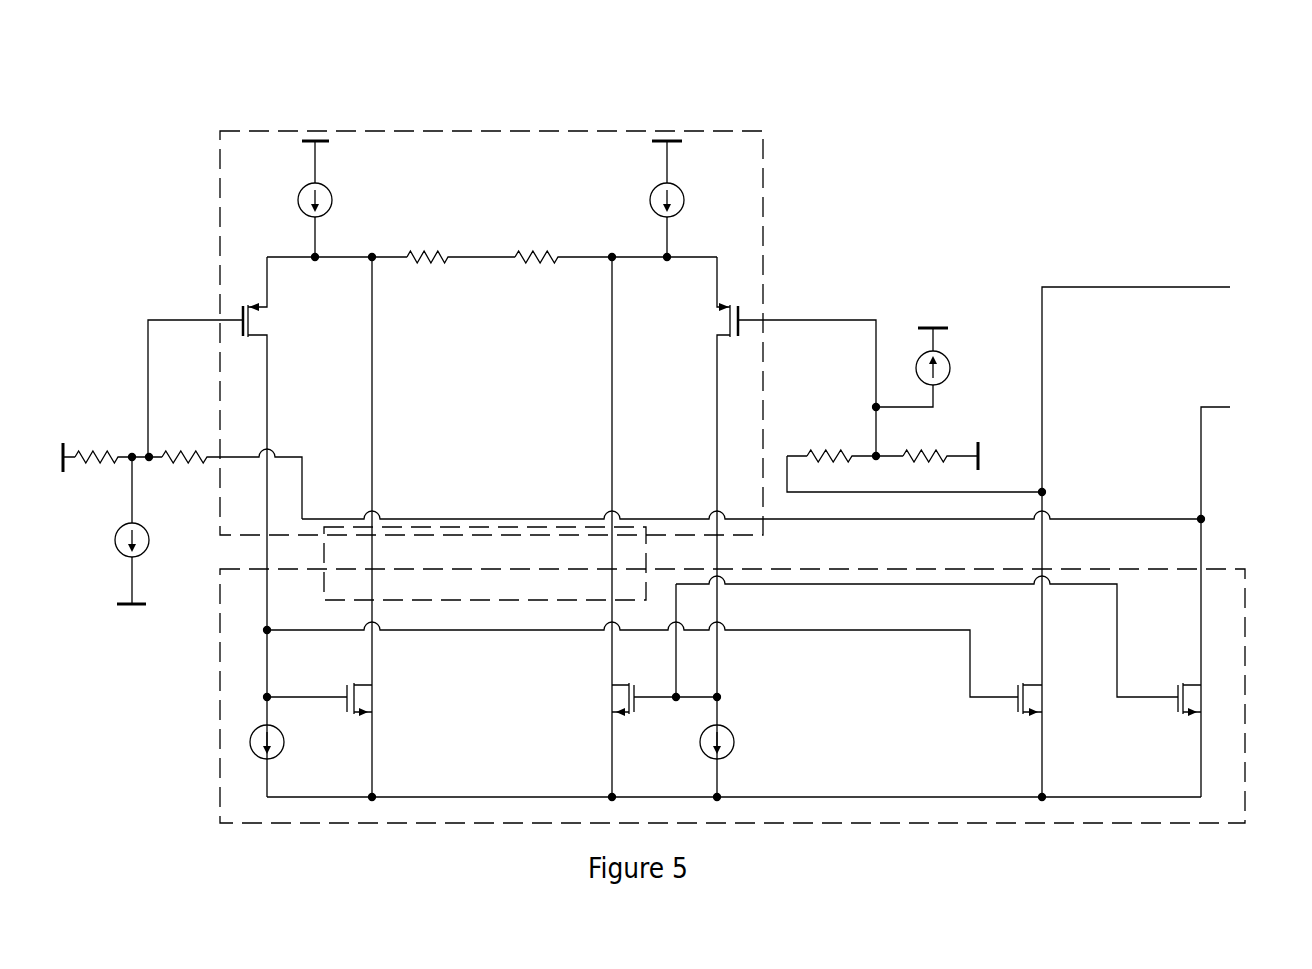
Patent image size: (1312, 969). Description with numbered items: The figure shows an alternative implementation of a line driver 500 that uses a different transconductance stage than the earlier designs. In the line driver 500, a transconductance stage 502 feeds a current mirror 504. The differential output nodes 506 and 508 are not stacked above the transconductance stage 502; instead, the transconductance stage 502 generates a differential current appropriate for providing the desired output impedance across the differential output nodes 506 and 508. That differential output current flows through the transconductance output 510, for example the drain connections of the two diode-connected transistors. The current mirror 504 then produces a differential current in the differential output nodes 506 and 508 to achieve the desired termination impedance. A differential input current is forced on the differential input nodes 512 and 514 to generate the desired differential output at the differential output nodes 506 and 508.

The line driver 500 is at (158, 94).
The transconductance stage 502 is at (261, 528).
The current mirror 504 is at (261, 815).
The differential output node txp 506 is at (1207, 285).
The differential output node txm 508 is at (1215, 405).
The transconductance output 510 is at (365, 596).
The differential input node ip 512 is at (133, 511).
The differential input node im 514 is at (830, 319).